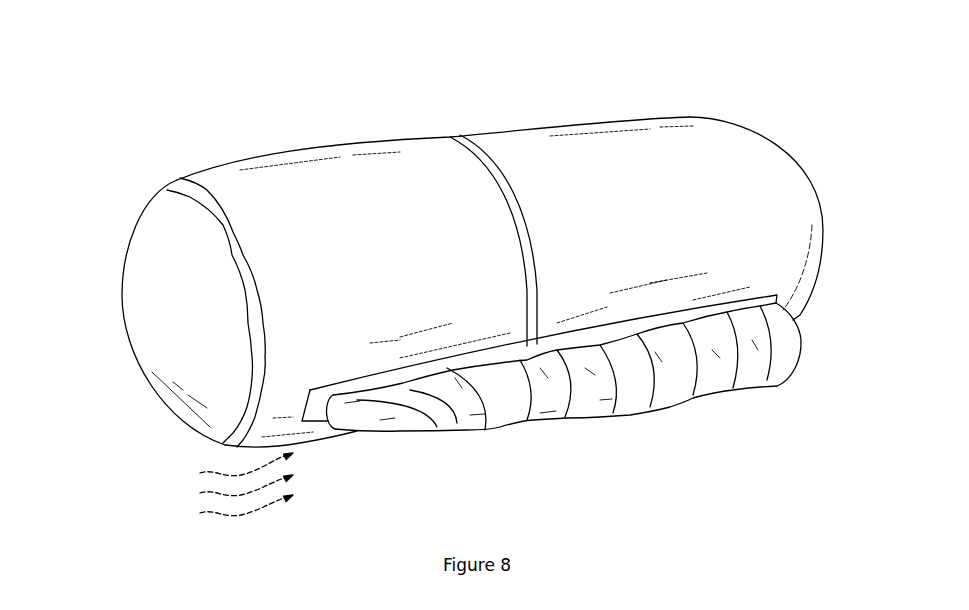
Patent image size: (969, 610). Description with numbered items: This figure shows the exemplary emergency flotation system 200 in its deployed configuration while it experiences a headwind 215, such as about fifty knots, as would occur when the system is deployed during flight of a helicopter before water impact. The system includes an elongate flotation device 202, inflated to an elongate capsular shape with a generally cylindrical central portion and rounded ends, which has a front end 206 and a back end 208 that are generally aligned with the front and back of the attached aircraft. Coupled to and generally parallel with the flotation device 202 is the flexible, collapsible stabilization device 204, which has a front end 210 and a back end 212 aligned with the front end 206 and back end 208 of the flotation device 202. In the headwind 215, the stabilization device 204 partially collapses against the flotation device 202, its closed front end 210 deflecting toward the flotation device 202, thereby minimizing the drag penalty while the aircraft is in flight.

The emergency flotation system 200 is at (261, 137).
The elongate flotation device 202 is at (527, 152).
The stabilization device 204 is at (672, 404).
The front end 206 is at (105, 333).
The back end 208 is at (838, 176).
The front end 210 is at (374, 451).
The back end 212 is at (803, 336).
The headwind 215 is at (223, 484).